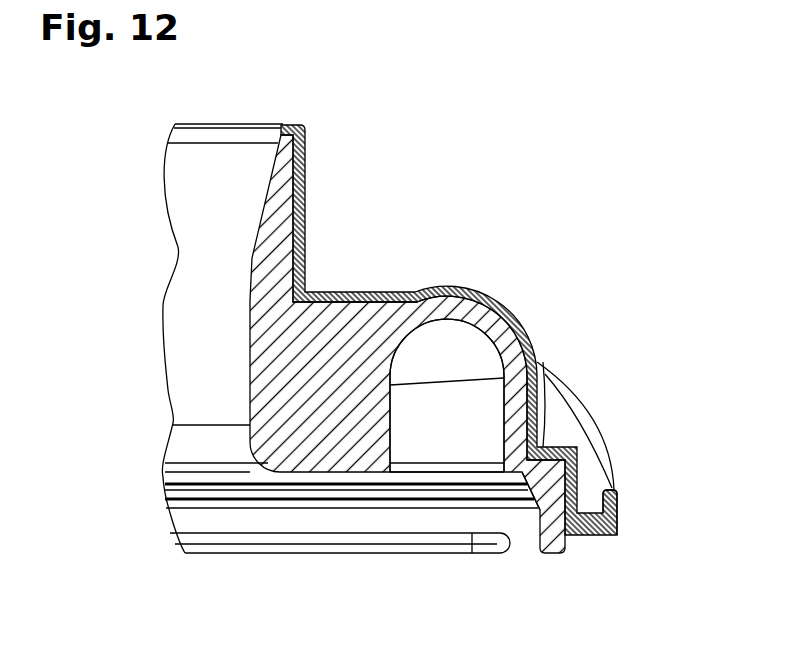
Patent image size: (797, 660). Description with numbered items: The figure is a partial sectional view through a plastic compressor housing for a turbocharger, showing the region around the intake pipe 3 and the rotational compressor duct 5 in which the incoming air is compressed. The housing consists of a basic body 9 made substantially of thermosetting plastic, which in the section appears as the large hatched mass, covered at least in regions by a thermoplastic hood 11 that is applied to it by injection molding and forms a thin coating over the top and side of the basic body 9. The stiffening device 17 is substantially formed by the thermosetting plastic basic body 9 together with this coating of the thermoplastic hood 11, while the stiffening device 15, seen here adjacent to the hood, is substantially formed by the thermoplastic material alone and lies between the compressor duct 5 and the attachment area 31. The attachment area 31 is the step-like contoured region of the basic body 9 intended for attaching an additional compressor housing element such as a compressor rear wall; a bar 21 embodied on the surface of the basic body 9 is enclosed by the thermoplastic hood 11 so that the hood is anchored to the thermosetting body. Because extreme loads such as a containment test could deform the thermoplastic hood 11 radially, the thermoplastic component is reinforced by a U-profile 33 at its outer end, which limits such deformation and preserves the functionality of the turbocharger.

The intake pipe 3 is at (224, 165).
The compressor duct 5 is at (432, 407).
The basic body 9 is at (343, 387).
The thermoplastic hood 11 is at (487, 298).
The stiffening device 15 is at (582, 437).
The stiffening device 17 is at (383, 308).
The bar 21 is at (447, 550).
The attachment area 31 is at (531, 516).
The U-profile 33 is at (617, 522).